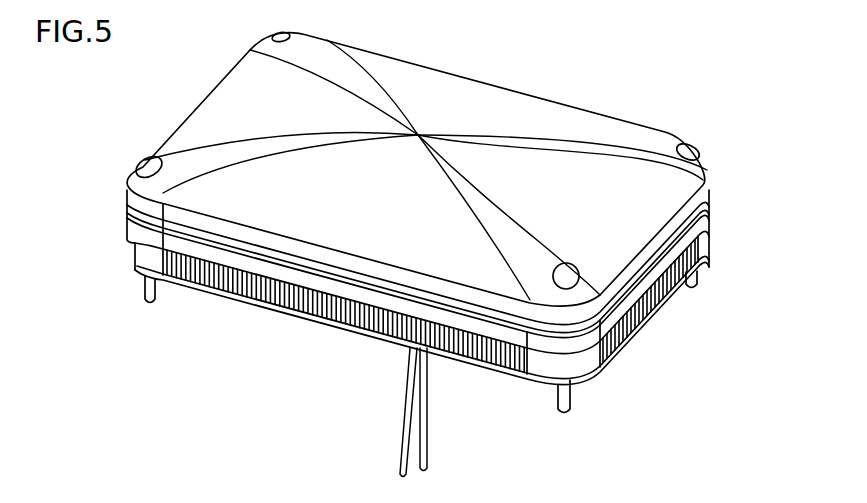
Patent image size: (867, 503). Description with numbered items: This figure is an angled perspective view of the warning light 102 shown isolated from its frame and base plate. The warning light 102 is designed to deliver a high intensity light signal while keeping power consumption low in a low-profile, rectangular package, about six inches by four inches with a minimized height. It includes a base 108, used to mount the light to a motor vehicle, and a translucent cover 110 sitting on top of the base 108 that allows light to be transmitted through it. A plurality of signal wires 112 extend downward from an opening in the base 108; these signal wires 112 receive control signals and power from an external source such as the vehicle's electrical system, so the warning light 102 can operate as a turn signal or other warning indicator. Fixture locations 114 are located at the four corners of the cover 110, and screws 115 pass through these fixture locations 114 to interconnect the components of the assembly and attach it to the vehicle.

The warning light 102 is at (217, 323).
The base 108 is at (322, 312).
The translucent cover 110 is at (475, 93).
The signal wires 112 is at (405, 448).
The fixture locations 114 is at (278, 36).
The screws 115 is at (143, 283).